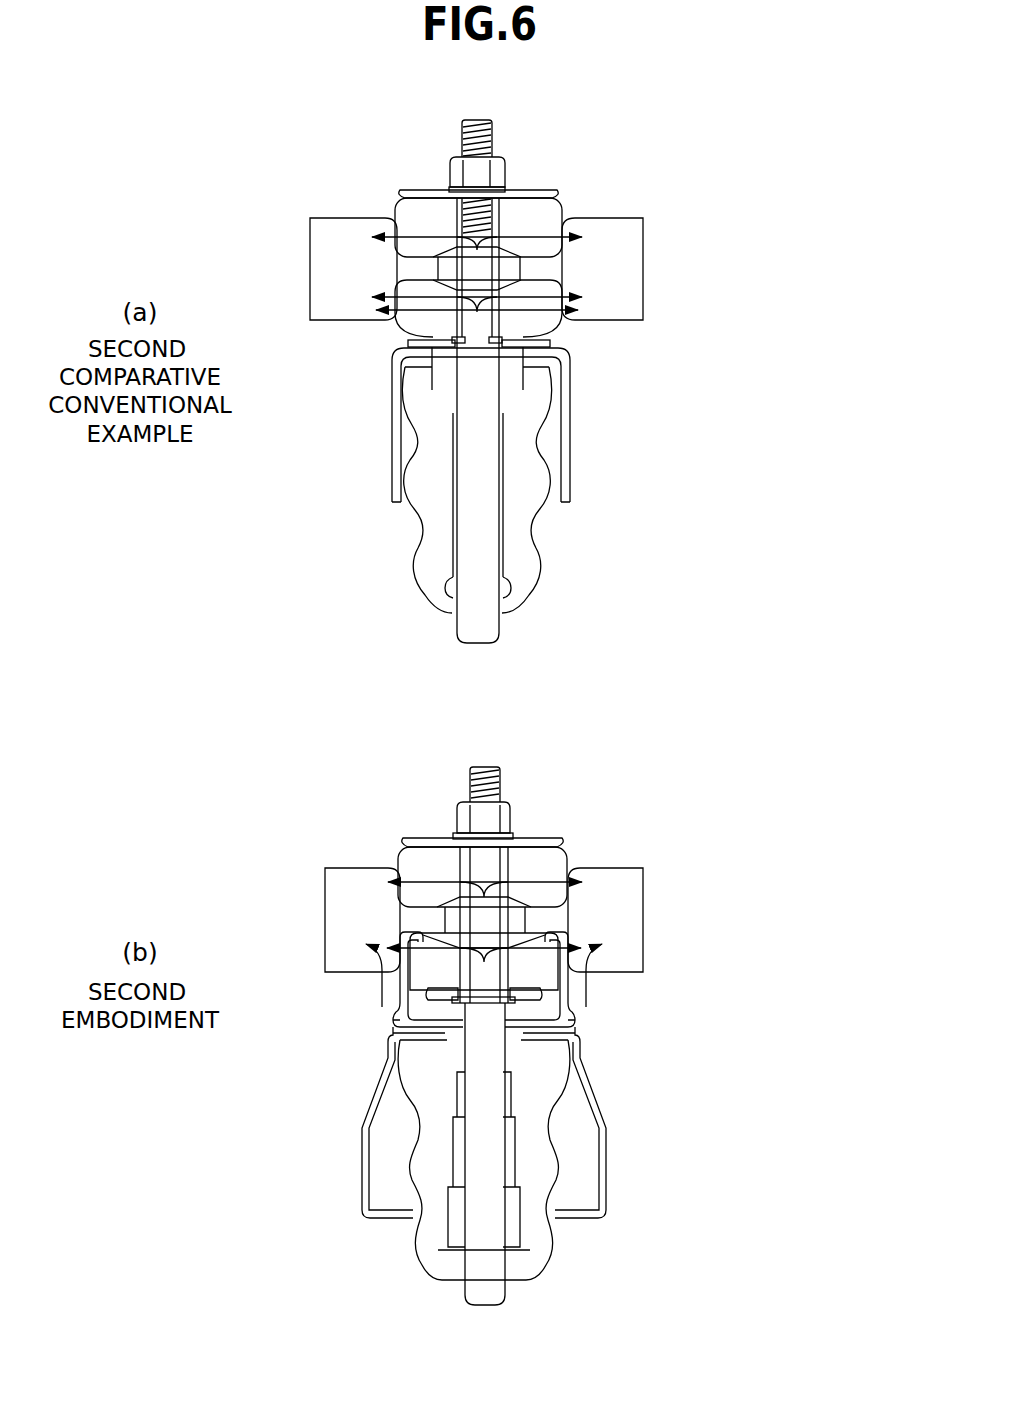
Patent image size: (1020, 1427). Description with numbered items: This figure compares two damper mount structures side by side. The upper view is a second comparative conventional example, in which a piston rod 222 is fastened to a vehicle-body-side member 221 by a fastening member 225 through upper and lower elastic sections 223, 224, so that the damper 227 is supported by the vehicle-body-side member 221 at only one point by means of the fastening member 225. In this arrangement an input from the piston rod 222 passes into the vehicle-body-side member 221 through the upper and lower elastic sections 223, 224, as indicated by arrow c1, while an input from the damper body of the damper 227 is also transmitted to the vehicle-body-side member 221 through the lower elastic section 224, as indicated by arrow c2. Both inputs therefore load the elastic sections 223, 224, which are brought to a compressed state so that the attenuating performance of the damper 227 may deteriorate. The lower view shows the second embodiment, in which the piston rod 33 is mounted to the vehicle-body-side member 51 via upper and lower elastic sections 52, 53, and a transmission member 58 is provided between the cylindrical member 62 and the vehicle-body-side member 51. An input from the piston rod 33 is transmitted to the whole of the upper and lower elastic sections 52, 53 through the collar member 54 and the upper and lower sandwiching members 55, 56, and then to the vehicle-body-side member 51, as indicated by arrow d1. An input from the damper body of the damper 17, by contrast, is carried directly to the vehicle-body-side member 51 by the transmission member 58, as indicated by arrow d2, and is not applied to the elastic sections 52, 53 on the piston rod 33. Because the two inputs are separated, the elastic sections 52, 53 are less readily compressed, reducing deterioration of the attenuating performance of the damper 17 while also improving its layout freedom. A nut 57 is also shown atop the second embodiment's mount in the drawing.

The vehicle-body-side member 221 is at (352, 213).
The piston rod 222 is at (500, 394).
The upper elastic section 223 is at (530, 210).
The lower elastic section 224 is at (552, 284).
The fastening member 225 is at (484, 166).
The damper 227 is at (580, 492).
The arrow c1 is at (479, 411).
The arrow c2 is at (471, 334).
The vehicle-body-side member 51 is at (352, 866).
The upper elastic section 52 is at (548, 868).
The lower elastic section 53 is at (535, 957).
The collar member 54 is at (408, 860).
The upper sandwiching member 55 is at (433, 842).
The lower sandwiching member 56 is at (400, 1048).
The nut 57 is at (487, 814).
The transmission member 58 is at (577, 1024).
The cylindrical member 62 is at (398, 1024).
The damper 17 is at (583, 1139).
The piston rod 33 is at (494, 1147).
The arrow d1 is at (482, 1049).
The arrow d2 is at (482, 976).